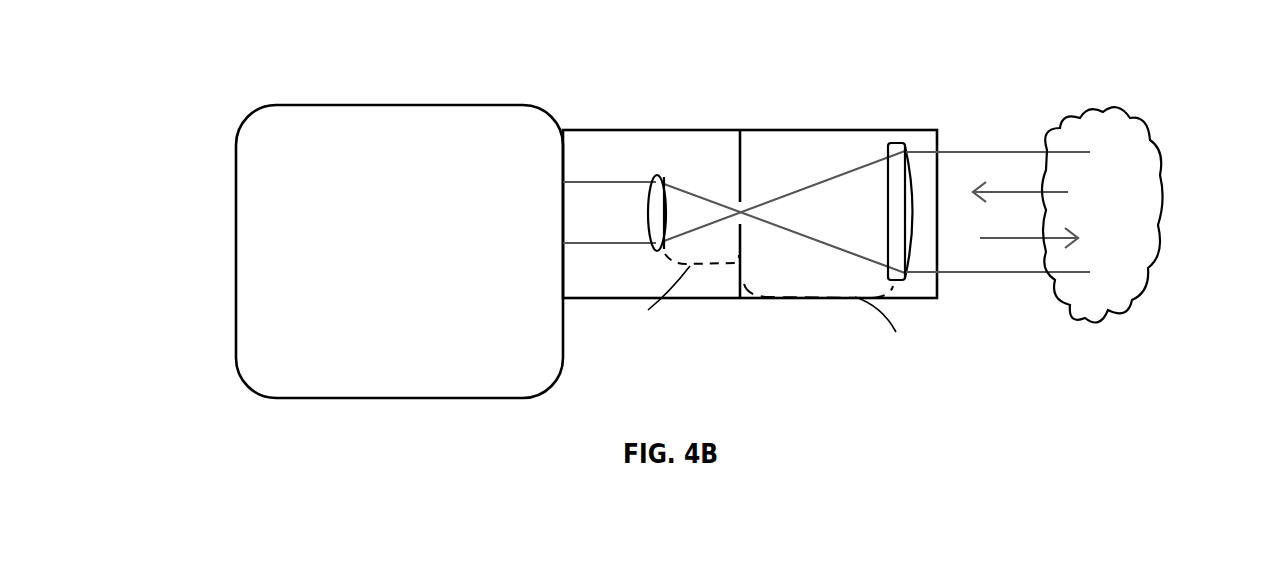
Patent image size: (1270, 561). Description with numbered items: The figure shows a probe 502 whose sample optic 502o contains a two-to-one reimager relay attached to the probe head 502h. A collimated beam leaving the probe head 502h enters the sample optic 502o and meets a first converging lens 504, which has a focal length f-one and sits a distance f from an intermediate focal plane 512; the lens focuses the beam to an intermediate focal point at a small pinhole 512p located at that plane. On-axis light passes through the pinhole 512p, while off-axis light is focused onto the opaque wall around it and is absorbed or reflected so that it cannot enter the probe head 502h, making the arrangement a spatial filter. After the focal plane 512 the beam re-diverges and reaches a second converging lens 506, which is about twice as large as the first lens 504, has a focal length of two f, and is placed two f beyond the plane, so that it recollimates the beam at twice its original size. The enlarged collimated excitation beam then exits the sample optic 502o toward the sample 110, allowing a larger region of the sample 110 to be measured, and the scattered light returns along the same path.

The probe 502 is at (233, 76).
The probe head 502h is at (379, 286).
The first converging lens 504 is at (660, 176).
The second converging lens 506 is at (903, 150).
The intermediate focal plane 512 is at (745, 301).
The pinhole 512p is at (748, 210).
The sample optic 502o is at (912, 130).
The sample 110 is at (1153, 152).